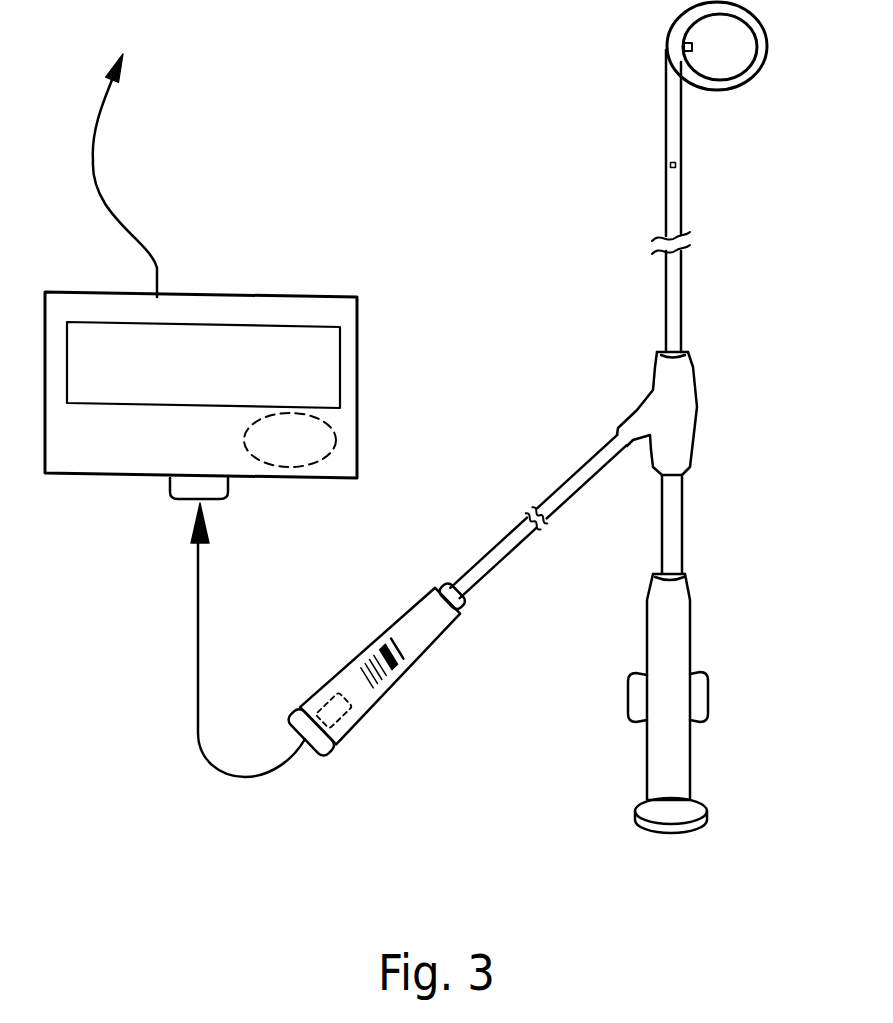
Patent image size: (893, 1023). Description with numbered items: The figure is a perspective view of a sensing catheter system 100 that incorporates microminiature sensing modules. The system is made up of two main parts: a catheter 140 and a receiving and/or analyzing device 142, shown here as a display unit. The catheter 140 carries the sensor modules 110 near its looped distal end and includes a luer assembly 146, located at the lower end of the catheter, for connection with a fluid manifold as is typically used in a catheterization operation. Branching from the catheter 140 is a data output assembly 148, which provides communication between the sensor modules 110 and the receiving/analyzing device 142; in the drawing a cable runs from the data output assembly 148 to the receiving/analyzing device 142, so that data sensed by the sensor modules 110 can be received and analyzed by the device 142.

The sensing catheter system 100 is at (360, 130).
The sensor modules 110 is at (695, 49).
The catheter 140 is at (745, 285).
The receiving and/or analyzing device 142 is at (231, 296).
The luer assembly 146 is at (692, 623).
The data output assembly 148 is at (333, 748).